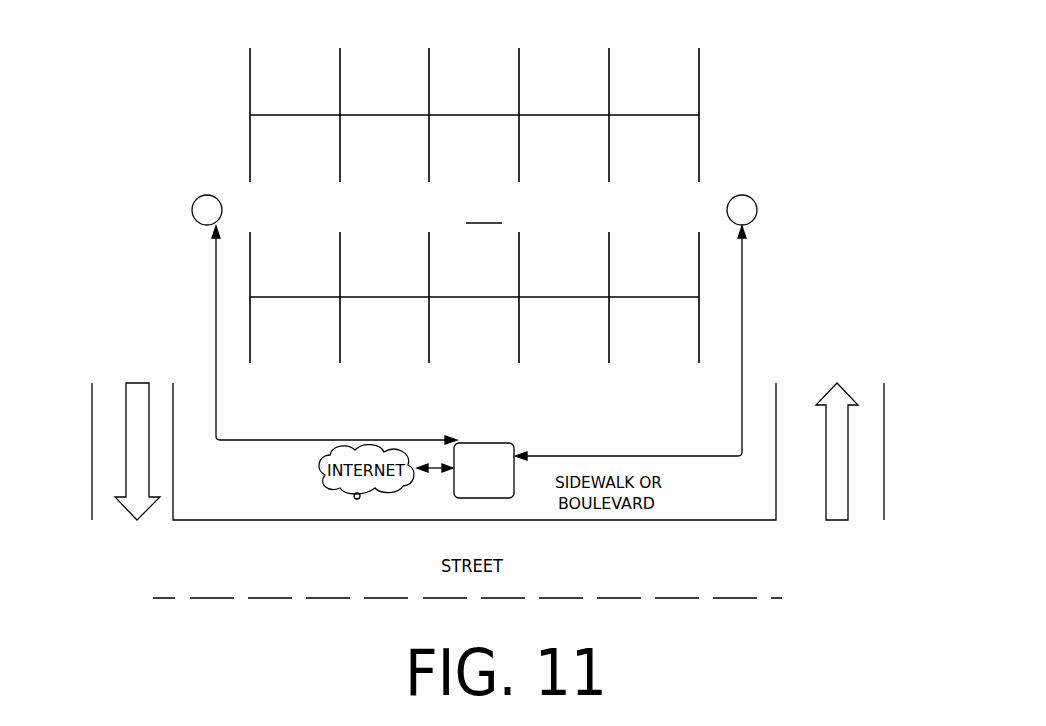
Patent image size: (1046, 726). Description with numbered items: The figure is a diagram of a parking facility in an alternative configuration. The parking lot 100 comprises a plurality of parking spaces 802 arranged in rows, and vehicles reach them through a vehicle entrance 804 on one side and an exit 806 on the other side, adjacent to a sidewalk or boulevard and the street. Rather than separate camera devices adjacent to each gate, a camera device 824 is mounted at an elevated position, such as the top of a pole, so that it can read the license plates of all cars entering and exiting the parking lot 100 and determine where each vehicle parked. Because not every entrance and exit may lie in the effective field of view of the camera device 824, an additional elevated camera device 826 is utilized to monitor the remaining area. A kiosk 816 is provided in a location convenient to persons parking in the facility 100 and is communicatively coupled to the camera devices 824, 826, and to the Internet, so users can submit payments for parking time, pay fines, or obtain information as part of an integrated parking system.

The parking lot 100 is at (484, 213).
The parking spaces 802 is at (560, 88).
The vehicle entrance 804 is at (886, 346).
The exit 806 is at (114, 345).
The kiosk 816 is at (487, 442).
The camera device 824 is at (756, 203).
The additional elevated camera device 826 is at (192, 202).